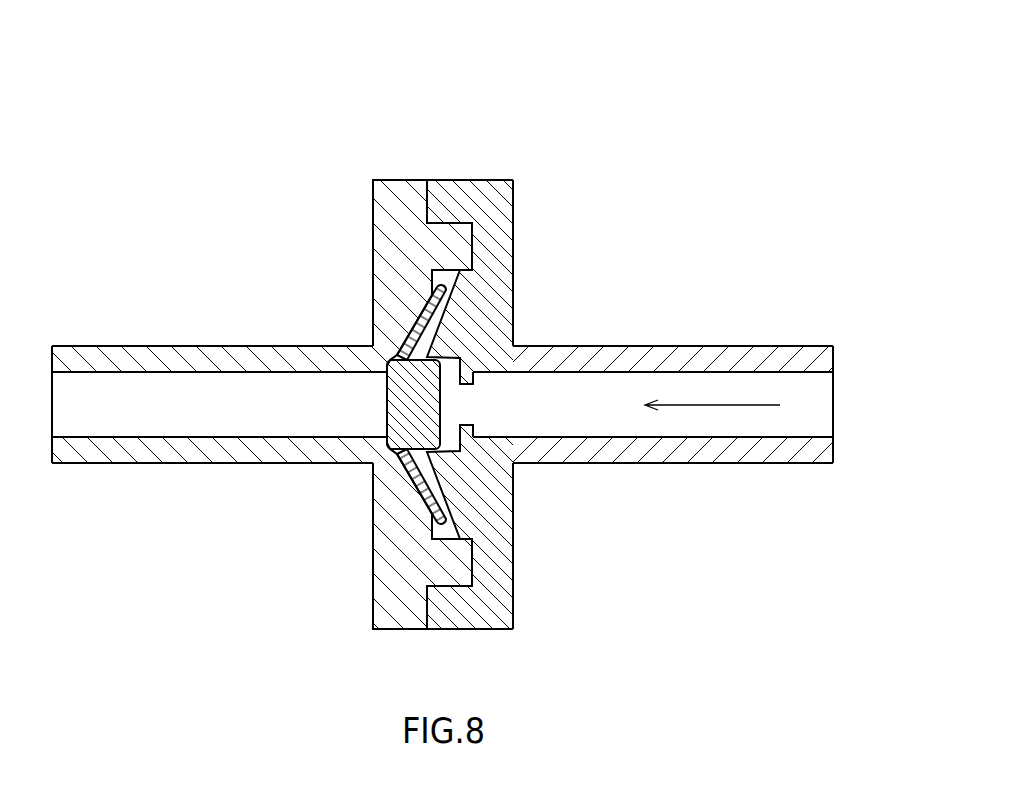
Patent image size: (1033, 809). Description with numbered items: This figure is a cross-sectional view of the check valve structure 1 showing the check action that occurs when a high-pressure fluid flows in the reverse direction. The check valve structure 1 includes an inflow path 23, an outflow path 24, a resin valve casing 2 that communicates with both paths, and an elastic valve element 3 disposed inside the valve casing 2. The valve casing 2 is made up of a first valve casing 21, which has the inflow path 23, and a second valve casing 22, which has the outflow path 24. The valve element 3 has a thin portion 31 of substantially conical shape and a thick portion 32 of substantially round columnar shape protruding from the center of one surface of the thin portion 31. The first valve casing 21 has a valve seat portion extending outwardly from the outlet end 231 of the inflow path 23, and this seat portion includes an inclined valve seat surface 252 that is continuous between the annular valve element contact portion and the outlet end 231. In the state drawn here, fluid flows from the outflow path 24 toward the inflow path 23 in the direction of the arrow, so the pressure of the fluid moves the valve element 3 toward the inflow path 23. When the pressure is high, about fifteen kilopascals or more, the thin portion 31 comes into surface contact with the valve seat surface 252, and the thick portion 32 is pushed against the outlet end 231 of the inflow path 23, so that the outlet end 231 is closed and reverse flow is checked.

The check valve structure 1 is at (676, 105).
The valve casing 2 is at (282, 339).
The first valve casing 21 is at (385, 178).
The second valve casing 22 is at (470, 363).
The inflow path 23 is at (112, 395).
The outflow path 24 is at (808, 395).
The outlet end of the inflow path 231 is at (378, 405).
The valve seat surface 252 is at (432, 305).
The valve element 3 is at (507, 387).
The thin portion 31 is at (445, 305).
The thick portion 32 is at (437, 405).